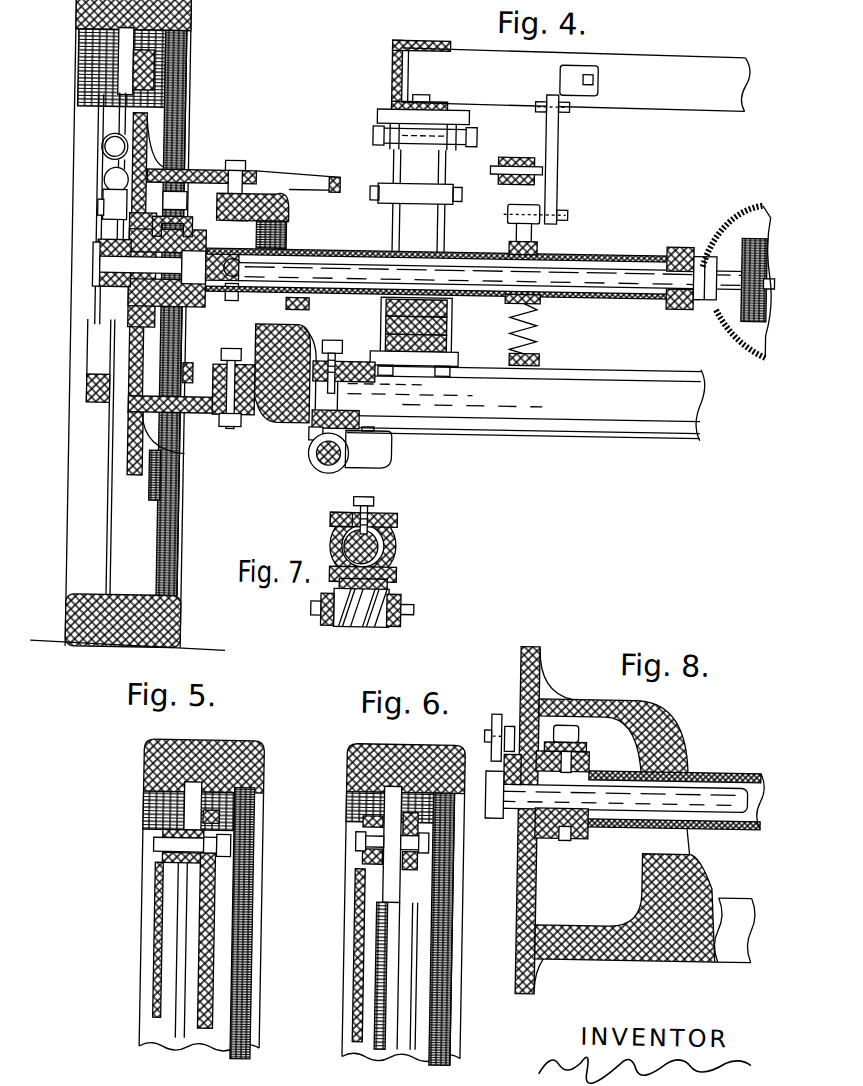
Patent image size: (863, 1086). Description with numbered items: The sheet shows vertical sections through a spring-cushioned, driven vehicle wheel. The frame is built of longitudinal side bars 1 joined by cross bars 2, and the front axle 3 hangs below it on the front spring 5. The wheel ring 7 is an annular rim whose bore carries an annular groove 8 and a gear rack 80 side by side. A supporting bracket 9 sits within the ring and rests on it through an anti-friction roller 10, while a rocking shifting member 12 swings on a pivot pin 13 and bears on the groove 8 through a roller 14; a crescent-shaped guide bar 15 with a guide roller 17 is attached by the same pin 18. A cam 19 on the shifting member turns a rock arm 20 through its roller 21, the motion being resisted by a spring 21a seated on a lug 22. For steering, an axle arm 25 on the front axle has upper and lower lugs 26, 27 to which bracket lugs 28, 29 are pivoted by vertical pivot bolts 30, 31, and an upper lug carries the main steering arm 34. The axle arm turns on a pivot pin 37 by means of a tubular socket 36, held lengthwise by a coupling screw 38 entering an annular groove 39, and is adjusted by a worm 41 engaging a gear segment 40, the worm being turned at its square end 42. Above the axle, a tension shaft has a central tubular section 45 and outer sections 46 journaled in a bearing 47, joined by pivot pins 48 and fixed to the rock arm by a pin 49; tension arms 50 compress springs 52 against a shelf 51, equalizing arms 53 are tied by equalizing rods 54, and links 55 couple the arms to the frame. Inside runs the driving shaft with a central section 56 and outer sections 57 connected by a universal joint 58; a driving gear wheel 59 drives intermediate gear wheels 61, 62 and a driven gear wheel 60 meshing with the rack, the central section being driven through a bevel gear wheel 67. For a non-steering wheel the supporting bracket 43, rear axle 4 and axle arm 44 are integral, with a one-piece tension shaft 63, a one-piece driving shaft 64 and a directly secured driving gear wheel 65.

In FIG. 4, the longitudinal side bar 1 is at (384, 80).
In FIG. 4, the cross bar 2 is at (652, 70).
In FIG. 4, the front axle 3 is at (521, 401).
In FIG. 8, the rear axle 4 is at (743, 912).
In FIG. 4, the front spring 5 is at (448, 330).
In FIG. 4, the wheel ring 7 is at (180, 6).
In FIG. 5, the wheel ring 7 is at (258, 770).
In FIG. 6, the wheel ring 7 is at (366, 762).
In FIG. 4, the annular groove 8 is at (121, 37).
In FIG. 5, the annular groove 8 is at (190, 800).
In FIG. 6, the annular groove 8 is at (388, 962).
In FIG. 4, the supporting bracket 9 is at (130, 410).
In FIG. 5, the supporting bracket 9 is at (221, 960).
In FIG. 4, the anti-friction roller 10 is at (148, 482).
In FIG. 4, the rocking shifting member 12 is at (90, 120).
In FIG. 5, the rocking shifting member 12 is at (161, 955).
In FIG. 6, the rocking shifting member 12 is at (361, 905).
In FIG. 5, the pivot pin 13 is at (165, 855).
In FIG. 6, the roller 14 is at (389, 812).
In FIG. 4, the crescent-shaped guide bar 15 is at (179, 54).
In FIG. 5, the crescent-shaped guide bar 15 is at (260, 818).
In FIG. 6, the crescent-shaped guide bar 15 is at (460, 860).
In FIG. 4, the guide roller 17 is at (115, 65).
In FIG. 6, the pin 18 is at (362, 843).
In FIG. 4, the cam 19 is at (84, 376).
In FIG. 8, the cam 19 is at (497, 818).
In FIG. 4, the rock arm 20 is at (97, 210).
In FIG. 8, the rock arm 20 is at (513, 725).
In FIG. 4, the roller 21 is at (92, 215).
In FIG. 8, the roller 21 is at (495, 730).
In FIG. 4, the spring 21a is at (95, 155).
In FIG. 4, the lug 22 is at (98, 186).
In FIG. 4, the axle arm 25 is at (304, 334).
In FIG. 7, the axle arm 25 is at (331, 546).
In FIG. 4, the upper lug 26 is at (270, 192).
In FIG. 4, the lower lug 27 is at (252, 420).
In FIG. 4, the upper bracket lug 28 is at (200, 175).
In FIG. 4, the lower bracket lug 29 is at (200, 420).
In FIG. 4, the upper pivot bolt 30 is at (238, 180).
In FIG. 4, the lower pivot bolt 31 is at (228, 431).
In FIG. 4, the main steering arm 34 is at (322, 184).
In FIG. 4, the tubular socket 36 is at (307, 435).
In FIG. 7, the tubular socket 36 is at (336, 526).
In FIG. 4, the pivot pin 37 is at (358, 405).
In FIG. 7, the pivot pin 37 is at (384, 553).
In FIG. 4, the coupling screw 38 is at (336, 352).
In FIG. 7, the coupling screw 38 is at (374, 504).
In FIG. 4, the annular groove 39 is at (360, 380).
In FIG. 7, the annular groove 39 is at (395, 524).
In FIG. 4, the gear segment 40 is at (308, 458).
In FIG. 7, the gear segment 40 is at (398, 578).
In FIG. 4, the worm 41 is at (327, 476).
In FIG. 7, the worm 41 is at (356, 628).
In FIG. 7, the square end 42 is at (416, 610).
In FIG. 8, the supporting bracket 43 is at (525, 920).
In FIG. 8, the axle arm 44 is at (690, 880).
In FIG. 4, the central tension shaft section 45 is at (590, 246).
In FIG. 4, the outer tension shaft section 46 is at (182, 226).
In FIG. 4, the bearing 47 is at (100, 235).
In FIG. 4, the pivot pin 48 is at (282, 240).
In FIG. 4, the pin 49 is at (88, 262).
In FIG. 4, the tension arm 50 is at (505, 227).
In FIG. 4, the shelf 51 is at (538, 358).
In FIG. 4, the spring 52 is at (536, 328).
In FIG. 4, the equalizing arm 53 is at (512, 158).
In FIG. 4, the equalizing rod 54 is at (506, 176).
In FIG. 4, the link 55 is at (552, 155).
In FIG. 4, the central driving shaft section 56 is at (598, 284).
In FIG. 4, the outer driving shaft section 57 is at (96, 270).
In FIG. 4, the universal joint 58 is at (222, 285).
In FIG. 4, the driving gear wheel 59 is at (105, 295).
In FIG. 4, the driven gear wheel 60 is at (160, 478).
In FIG. 4, the intermediate gear wheel 61 is at (205, 362).
In FIG. 4, the intermediate gear wheel 62 is at (228, 305).
In FIG. 8, the one-piece tension shaft 63 is at (732, 778).
In FIG. 8, the one-piece driving shaft 64 is at (615, 808).
In FIG. 8, the driving gear wheel 65 is at (569, 838).
In FIG. 4, the bevel gear wheel 67 is at (718, 236).
In FIG. 4, the gear rack 80 is at (172, 73).
In FIG. 5, the gear rack 80 is at (250, 890).
In FIG. 6, the gear rack 80 is at (452, 1005).